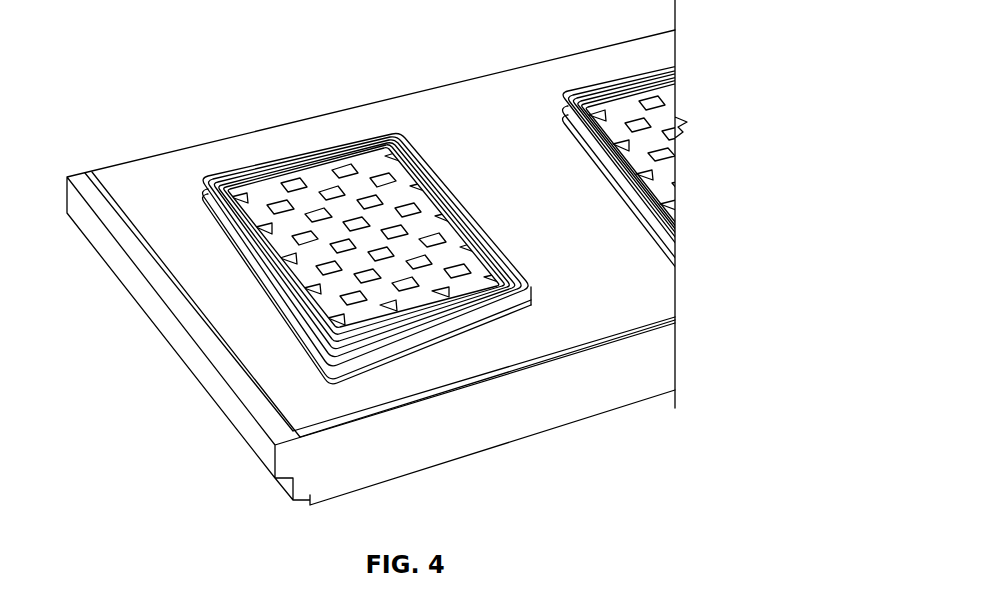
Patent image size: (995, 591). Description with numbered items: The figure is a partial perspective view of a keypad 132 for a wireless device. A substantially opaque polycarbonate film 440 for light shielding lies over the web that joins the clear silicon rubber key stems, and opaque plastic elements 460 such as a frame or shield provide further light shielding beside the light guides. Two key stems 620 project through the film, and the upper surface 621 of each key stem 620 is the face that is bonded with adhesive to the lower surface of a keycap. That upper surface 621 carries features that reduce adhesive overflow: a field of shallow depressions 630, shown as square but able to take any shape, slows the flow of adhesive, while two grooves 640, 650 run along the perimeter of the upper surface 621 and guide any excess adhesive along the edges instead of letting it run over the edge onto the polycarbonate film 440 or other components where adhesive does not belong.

The keypad 132 is at (348, 84).
The polycarbonate film 440 is at (670, 293).
The opaque plastic elements 460 is at (618, 398).
The key stem 620 is at (513, 305).
The upper surface 621 is at (432, 272).
The depressions 630 is at (353, 302).
The groove 640 is at (258, 256).
The groove 650 is at (262, 266).